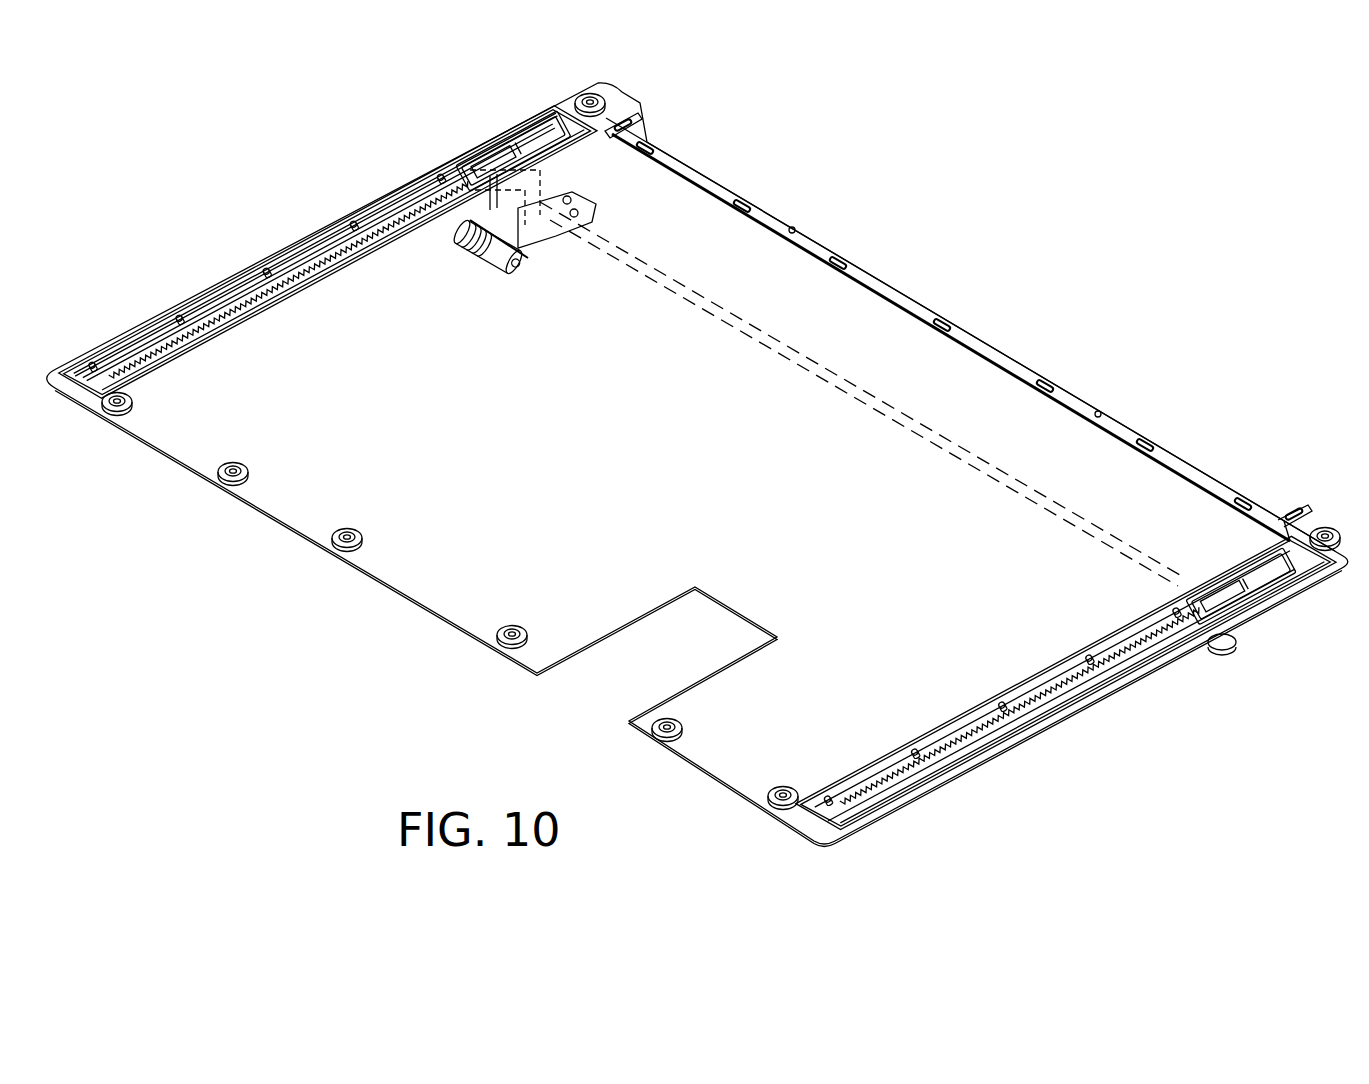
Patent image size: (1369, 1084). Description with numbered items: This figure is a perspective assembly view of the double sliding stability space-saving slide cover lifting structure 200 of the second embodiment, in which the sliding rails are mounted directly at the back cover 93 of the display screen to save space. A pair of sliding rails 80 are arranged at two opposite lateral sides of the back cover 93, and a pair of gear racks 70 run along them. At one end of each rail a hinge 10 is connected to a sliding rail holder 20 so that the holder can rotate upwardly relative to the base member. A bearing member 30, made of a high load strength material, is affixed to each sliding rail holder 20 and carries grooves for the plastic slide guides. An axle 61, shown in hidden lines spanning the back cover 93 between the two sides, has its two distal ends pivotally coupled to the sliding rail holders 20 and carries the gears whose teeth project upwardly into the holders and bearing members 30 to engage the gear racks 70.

The hinge 10 is at (501, 280).
The sliding rail holder 20 is at (470, 208).
The bearing member 30 is at (495, 136).
The axle 61 is at (948, 455).
The gear rack 70 is at (402, 212).
The sliding rail 80 is at (245, 282).
The back cover 93 is at (992, 405).
The double sliding stability space-saving slide cover lifting structure 200 is at (1000, 191).